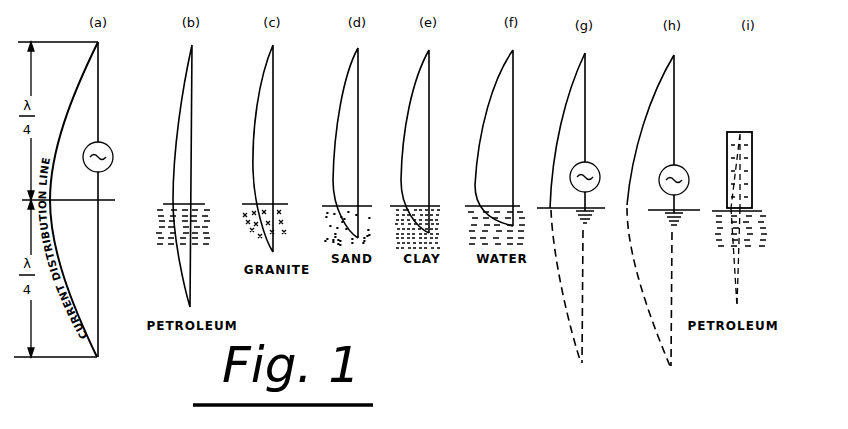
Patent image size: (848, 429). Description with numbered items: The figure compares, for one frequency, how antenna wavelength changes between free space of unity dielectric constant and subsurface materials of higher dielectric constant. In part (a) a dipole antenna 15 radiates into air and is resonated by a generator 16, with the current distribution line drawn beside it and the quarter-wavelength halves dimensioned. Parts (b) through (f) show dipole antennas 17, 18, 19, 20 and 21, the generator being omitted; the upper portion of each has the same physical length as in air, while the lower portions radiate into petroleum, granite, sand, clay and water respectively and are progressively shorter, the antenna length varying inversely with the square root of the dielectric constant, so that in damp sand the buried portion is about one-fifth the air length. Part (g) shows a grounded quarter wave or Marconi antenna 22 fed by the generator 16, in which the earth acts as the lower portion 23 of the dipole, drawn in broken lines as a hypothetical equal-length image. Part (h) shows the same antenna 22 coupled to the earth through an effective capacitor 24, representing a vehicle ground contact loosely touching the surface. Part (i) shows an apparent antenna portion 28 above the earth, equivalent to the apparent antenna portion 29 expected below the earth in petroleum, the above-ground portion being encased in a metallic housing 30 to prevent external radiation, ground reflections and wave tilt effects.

The dipole antenna 15 is at (100, 120).
The generator 16 is at (110, 167).
The dipole antenna 17 is at (191, 280).
The dipole antenna 18 is at (275, 233).
The dipole antenna 19 is at (359, 227).
The dipole antenna 20 is at (430, 222).
The dipole antenna 21 is at (522, 217).
The grounded quarter wave antenna 22 is at (587, 143).
The lower portion 23 is at (584, 323).
The effective capacitor 24 is at (680, 214).
The apparent antenna portion 28 is at (746, 166).
The apparent antenna portion 29 is at (741, 242).
The metallic housing 30 is at (741, 133).